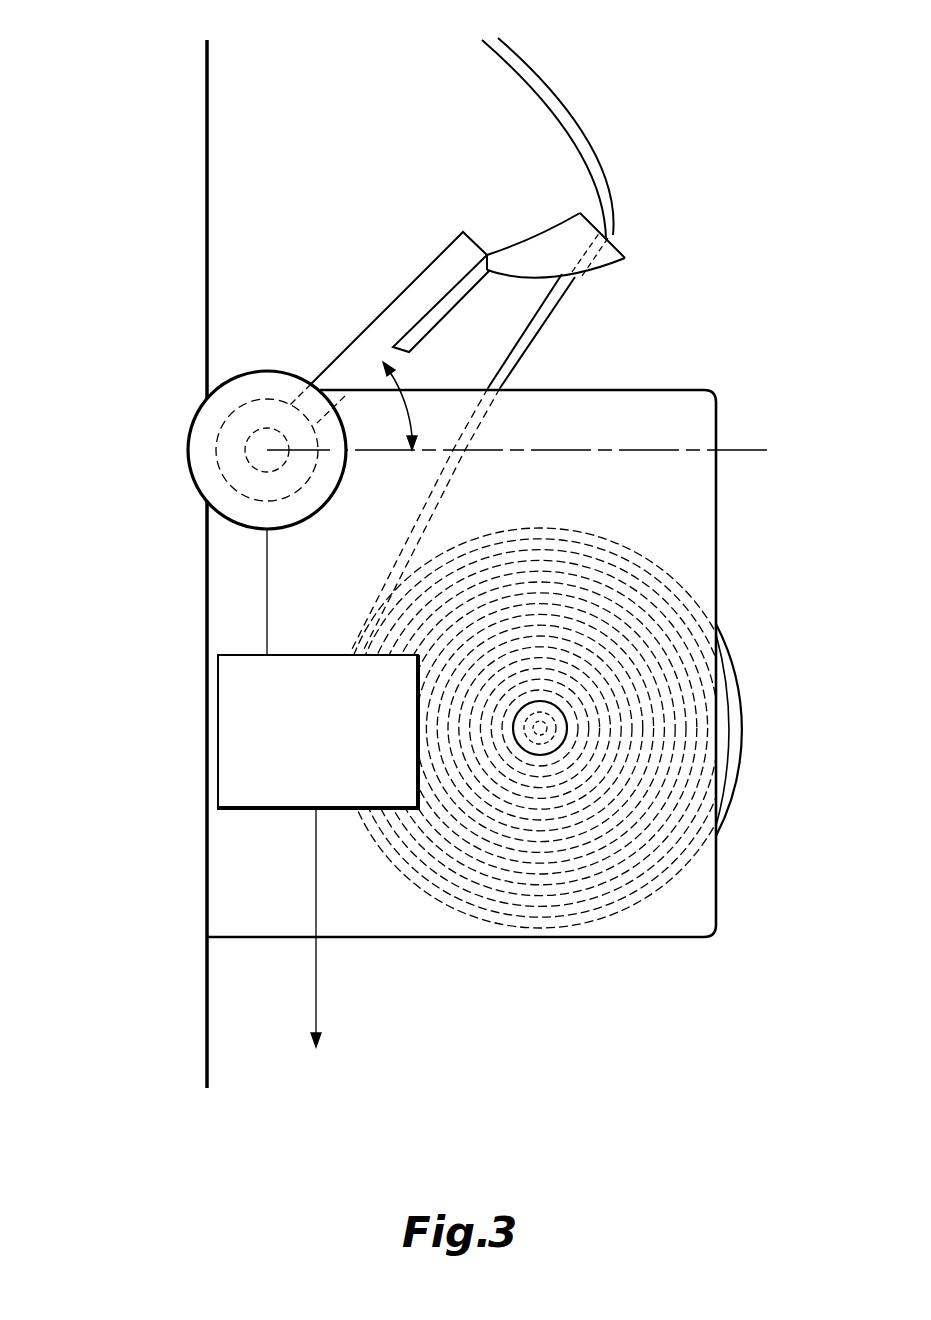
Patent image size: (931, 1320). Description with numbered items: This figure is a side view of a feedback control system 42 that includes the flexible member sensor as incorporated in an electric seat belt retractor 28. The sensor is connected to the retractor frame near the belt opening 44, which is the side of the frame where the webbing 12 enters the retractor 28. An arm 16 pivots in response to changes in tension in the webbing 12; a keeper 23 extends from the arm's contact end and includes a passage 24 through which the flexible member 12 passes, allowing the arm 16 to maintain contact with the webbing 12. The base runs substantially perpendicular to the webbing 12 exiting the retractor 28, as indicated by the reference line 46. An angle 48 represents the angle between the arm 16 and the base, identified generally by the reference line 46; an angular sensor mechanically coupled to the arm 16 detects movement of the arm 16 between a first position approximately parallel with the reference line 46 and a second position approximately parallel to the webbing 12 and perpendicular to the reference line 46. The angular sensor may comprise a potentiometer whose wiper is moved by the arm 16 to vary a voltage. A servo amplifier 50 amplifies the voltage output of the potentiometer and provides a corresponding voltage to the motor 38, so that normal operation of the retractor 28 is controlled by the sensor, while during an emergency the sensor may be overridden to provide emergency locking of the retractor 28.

The flexible member 12 is at (530, 72).
The arm 16 is at (388, 317).
The keeper 23 is at (633, 262).
The passage 24 is at (618, 237).
The electric seat belt retractor 28 is at (737, 157).
The motor 38 is at (302, 1154).
The feedback control system 42 is at (187, 417).
The belt opening 44 is at (652, 369).
The reference line 46 is at (744, 450).
The angle 48 is at (416, 392).
The servo amplifier 50 is at (304, 778).